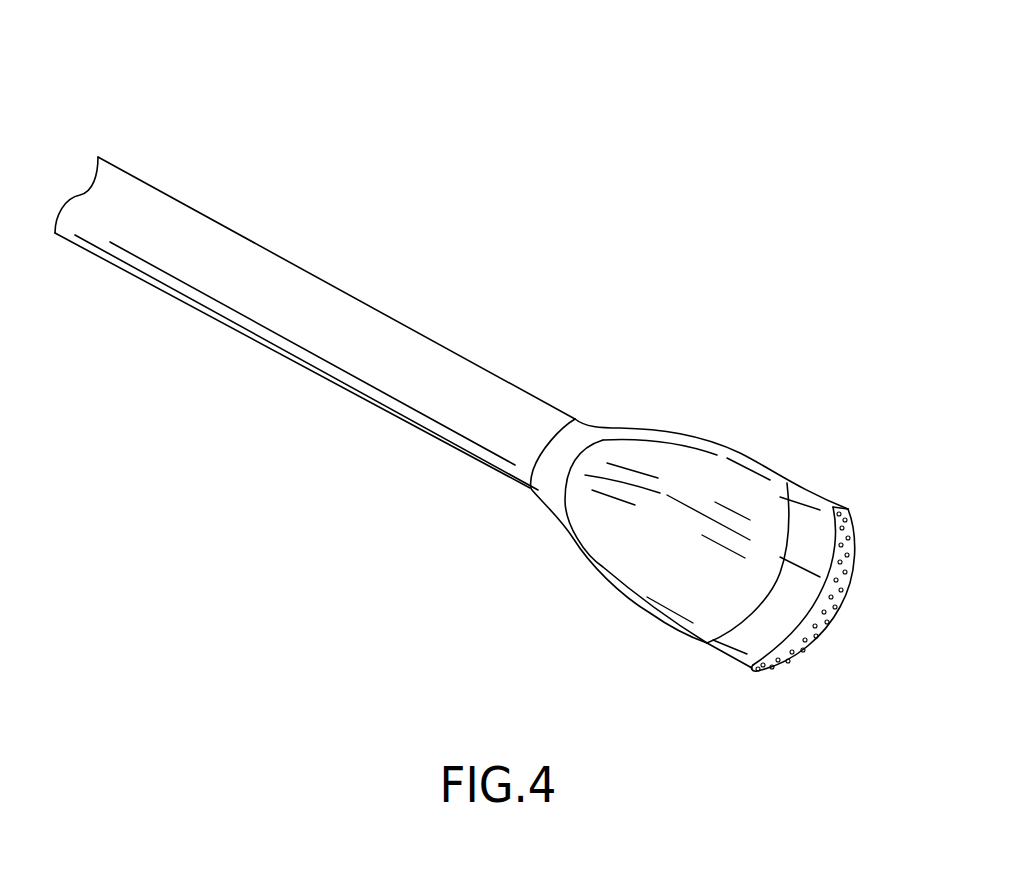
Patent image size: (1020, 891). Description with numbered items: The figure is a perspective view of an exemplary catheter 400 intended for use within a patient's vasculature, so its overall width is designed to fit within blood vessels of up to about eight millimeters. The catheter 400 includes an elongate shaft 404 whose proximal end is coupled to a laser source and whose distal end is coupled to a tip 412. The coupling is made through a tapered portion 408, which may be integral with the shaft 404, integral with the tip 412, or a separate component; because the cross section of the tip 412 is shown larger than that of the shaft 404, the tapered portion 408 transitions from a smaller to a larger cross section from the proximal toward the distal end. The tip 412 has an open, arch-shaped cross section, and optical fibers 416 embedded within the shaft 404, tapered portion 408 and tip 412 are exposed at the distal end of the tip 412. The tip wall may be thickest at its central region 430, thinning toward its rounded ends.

The catheter 400 is at (363, 140).
The shaft 404 is at (203, 237).
The tapered portion 408 is at (667, 426).
The tip 412 is at (822, 493).
The optical fibers 416 is at (812, 645).
The central region 430 is at (840, 603).